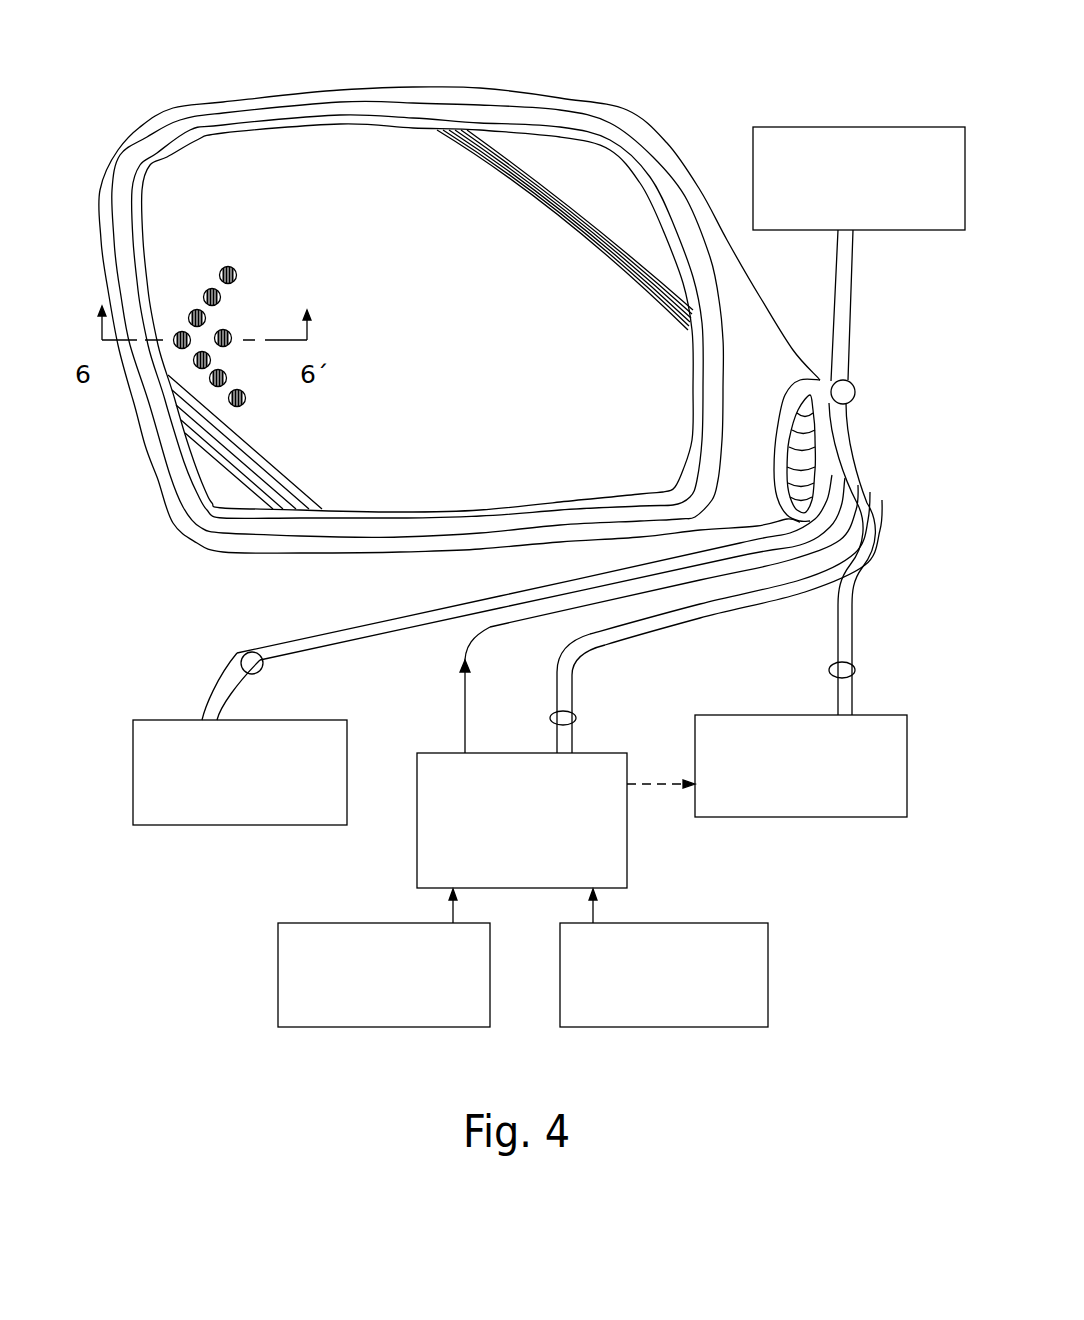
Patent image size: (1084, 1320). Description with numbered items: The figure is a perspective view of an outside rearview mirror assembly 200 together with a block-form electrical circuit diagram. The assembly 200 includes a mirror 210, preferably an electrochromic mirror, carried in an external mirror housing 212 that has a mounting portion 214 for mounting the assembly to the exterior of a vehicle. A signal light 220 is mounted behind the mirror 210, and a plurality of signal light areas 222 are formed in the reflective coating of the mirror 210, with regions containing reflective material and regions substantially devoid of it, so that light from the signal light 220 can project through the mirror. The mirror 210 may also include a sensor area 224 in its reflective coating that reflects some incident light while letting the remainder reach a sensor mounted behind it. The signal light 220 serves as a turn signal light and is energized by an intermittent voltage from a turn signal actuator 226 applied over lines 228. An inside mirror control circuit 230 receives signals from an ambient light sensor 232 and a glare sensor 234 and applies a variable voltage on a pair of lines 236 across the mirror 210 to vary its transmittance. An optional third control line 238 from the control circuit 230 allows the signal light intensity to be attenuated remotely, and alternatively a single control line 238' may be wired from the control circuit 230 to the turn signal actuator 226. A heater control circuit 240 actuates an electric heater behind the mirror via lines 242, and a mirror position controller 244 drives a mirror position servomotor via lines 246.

The outside rearview mirror assembly 200 is at (400, 60).
The mirror 210 is at (546, 148).
The external mirror housing 212 is at (717, 257).
The mounting portion 214 is at (752, 494).
The signal light 220 is at (237, 162).
The signal light areas 222 is at (180, 338).
The sensor area 224 is at (222, 336).
The turn signal actuator 226 is at (695, 747).
The lines 228 is at (856, 670).
The inside mirror control circuit 230 is at (628, 857).
The ambient light sensor 232 is at (490, 996).
The glare sensor 234 is at (770, 970).
The pair of lines 236 is at (578, 721).
The third control line 238 is at (626, 619).
The control line 238' is at (680, 817).
The heater control circuit 240 is at (850, 125).
The lines 242 is at (832, 380).
The mirror position controller 244 is at (237, 826).
The lines 246 is at (240, 652).